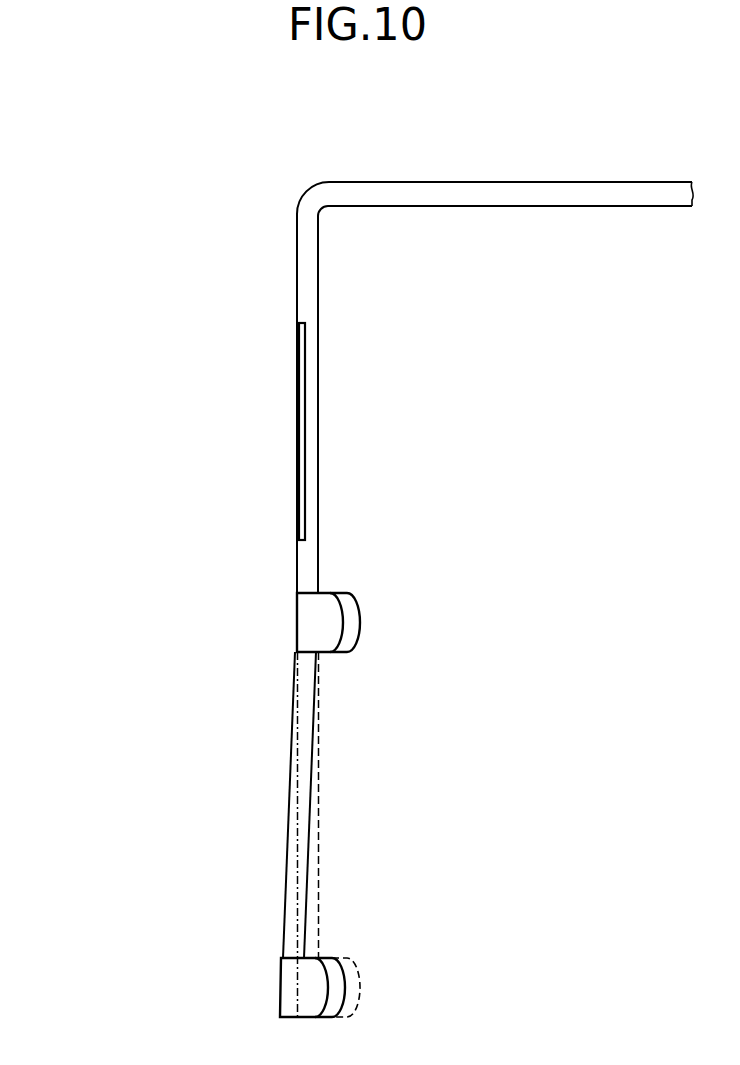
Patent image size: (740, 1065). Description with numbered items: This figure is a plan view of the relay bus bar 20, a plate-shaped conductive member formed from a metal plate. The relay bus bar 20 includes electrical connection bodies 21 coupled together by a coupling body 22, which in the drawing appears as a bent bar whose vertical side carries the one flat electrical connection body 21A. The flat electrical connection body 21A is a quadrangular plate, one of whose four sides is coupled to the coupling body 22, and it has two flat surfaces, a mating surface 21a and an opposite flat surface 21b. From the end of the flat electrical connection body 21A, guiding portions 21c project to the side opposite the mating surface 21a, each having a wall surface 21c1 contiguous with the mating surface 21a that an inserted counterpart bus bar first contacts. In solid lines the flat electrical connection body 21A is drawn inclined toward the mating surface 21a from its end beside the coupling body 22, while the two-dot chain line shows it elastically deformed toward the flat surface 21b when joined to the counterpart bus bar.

The relay bus bar 20 is at (428, 143).
The coupling body 22 is at (297, 279).
The electrical connection body 21 is at (292, 834).
The flat electrical connection body 21A is at (289, 817).
The mating surface 21a is at (285, 898).
The flat surface 21b is at (308, 900).
The guiding portion 21c is at (321, 795).
The wall surface 21c1 is at (313, 622).